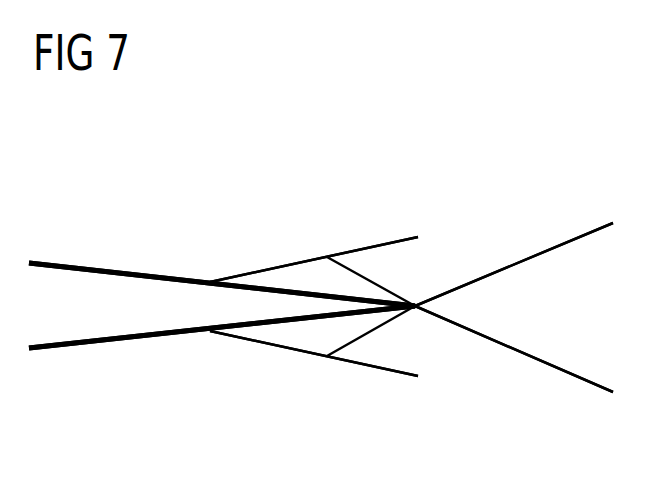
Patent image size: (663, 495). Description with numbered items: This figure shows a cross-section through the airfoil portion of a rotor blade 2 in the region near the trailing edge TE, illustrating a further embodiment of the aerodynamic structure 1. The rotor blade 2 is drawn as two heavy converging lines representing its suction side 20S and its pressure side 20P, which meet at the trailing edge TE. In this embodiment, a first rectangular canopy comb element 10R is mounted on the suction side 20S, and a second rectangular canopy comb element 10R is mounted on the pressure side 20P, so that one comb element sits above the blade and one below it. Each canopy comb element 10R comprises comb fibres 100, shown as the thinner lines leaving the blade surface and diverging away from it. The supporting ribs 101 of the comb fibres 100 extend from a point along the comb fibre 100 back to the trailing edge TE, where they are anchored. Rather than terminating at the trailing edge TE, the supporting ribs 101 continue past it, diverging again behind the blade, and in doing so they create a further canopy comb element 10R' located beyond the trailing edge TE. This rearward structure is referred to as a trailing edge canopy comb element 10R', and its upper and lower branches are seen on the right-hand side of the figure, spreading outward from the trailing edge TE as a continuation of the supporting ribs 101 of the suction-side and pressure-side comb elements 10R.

The aerodynamic structure 1 is at (350, 118).
The rotor blade 2 is at (155, 271).
The suction side 20S is at (66, 264).
The pressure side 20P is at (67, 349).
The rectangular canopy comb element 10R is at (314, 315).
The comb fibre 100 is at (382, 242).
The trailing edge canopy comb element 10R' is at (514, 305).
The supporting rib 101 is at (568, 244).
The trailing edge TE is at (418, 310).